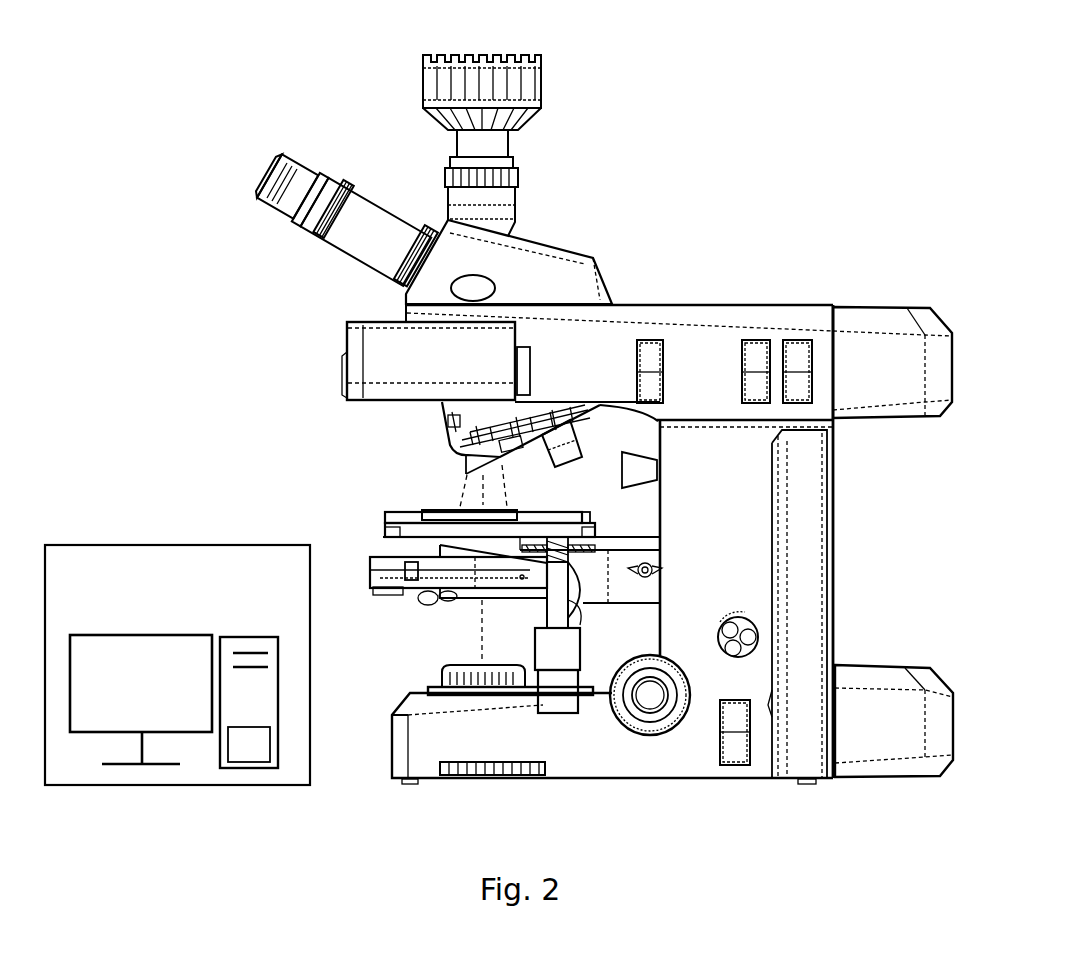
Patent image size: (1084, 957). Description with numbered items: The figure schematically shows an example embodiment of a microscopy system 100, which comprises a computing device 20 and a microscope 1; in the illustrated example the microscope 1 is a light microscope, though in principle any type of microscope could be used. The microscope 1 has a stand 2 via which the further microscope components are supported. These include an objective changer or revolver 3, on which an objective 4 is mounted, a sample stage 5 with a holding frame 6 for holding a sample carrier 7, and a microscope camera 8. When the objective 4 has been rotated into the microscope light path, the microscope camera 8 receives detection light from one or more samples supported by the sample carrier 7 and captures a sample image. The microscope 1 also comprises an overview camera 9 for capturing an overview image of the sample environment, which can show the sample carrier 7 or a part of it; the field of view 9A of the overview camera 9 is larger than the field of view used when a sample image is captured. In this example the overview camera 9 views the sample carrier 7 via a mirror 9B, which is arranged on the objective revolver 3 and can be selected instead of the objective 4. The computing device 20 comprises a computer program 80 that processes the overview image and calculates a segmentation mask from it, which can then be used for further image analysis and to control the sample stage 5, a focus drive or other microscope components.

The microscopy system 100 is at (714, 40).
The microscope 1 is at (805, 262).
The stand 2 is at (815, 532).
The objective changer/revolver 3 is at (448, 420).
The objective 4 is at (577, 436).
The sample stage 5 is at (408, 535).
The holding frame 6 is at (385, 522).
The sample carrier 7 is at (422, 515).
The microscope camera 8 is at (532, 72).
The overview camera 9 is at (467, 477).
The field of view 9A is at (462, 490).
The mirror 9B is at (467, 467).
The computing device 20 is at (162, 596).
The computer program 80 is at (236, 758).